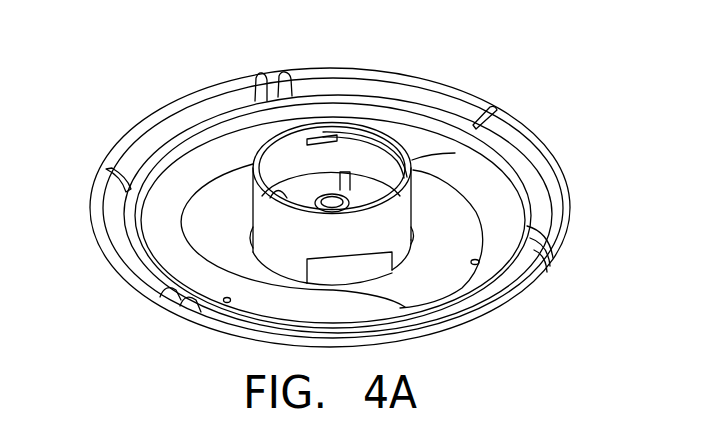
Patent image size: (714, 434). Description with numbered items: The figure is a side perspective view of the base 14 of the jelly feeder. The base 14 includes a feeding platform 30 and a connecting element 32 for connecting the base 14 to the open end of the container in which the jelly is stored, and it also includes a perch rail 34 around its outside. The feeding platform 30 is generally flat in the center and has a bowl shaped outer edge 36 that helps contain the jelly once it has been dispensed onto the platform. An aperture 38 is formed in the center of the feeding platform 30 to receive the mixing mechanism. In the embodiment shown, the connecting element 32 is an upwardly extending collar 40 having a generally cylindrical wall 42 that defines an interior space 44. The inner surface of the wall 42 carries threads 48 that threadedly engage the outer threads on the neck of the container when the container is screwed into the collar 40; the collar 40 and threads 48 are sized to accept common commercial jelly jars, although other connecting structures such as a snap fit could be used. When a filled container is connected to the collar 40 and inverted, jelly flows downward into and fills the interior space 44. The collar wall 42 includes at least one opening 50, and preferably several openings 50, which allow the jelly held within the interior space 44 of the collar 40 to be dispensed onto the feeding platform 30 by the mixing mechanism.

The base 14 is at (514, 90).
The feeding platform 30 is at (463, 217).
The connecting element 32 is at (291, 158).
The perch rail 34 is at (342, 66).
The bowl shaped outer edge 36 is at (511, 221).
The aperture 38 is at (346, 198).
The collar 40 is at (248, 172).
The cylindrical wall 42 is at (399, 233).
The interior space 44 is at (318, 173).
The threads 48 is at (349, 136).
The opening 50 is at (455, 153).